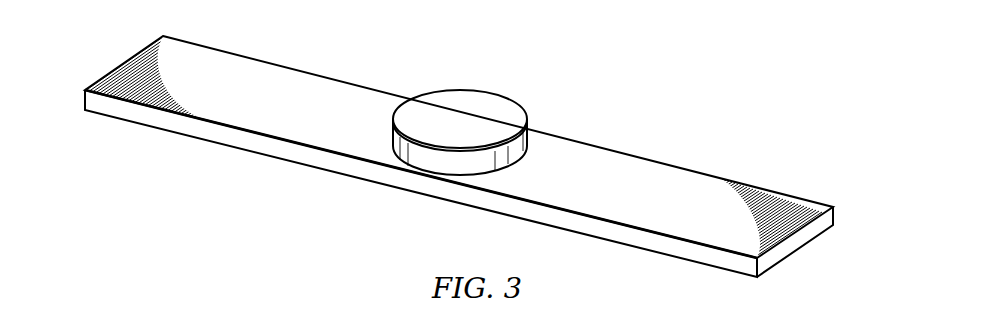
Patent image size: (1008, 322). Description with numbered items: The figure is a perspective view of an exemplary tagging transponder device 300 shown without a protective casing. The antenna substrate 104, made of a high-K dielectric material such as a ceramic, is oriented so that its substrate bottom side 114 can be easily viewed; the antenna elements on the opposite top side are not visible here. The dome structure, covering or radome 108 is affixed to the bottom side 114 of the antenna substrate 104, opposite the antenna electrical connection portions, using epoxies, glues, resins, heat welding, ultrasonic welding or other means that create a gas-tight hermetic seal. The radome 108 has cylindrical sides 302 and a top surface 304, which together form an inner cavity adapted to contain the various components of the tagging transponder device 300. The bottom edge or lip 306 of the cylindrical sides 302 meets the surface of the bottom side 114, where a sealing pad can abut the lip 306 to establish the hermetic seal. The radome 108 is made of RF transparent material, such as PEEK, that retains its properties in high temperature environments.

The tagging transponder device 300 is at (597, 62).
The antenna substrate 104 is at (653, 242).
The substrate bottom side 114 is at (662, 162).
The radome 108 is at (433, 85).
The top surface 304 is at (482, 100).
The bottom edge or lip 306 is at (503, 168).
The cylindrical sides 302 is at (462, 166).